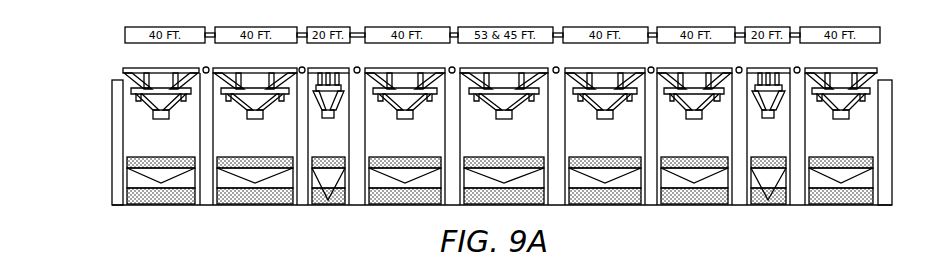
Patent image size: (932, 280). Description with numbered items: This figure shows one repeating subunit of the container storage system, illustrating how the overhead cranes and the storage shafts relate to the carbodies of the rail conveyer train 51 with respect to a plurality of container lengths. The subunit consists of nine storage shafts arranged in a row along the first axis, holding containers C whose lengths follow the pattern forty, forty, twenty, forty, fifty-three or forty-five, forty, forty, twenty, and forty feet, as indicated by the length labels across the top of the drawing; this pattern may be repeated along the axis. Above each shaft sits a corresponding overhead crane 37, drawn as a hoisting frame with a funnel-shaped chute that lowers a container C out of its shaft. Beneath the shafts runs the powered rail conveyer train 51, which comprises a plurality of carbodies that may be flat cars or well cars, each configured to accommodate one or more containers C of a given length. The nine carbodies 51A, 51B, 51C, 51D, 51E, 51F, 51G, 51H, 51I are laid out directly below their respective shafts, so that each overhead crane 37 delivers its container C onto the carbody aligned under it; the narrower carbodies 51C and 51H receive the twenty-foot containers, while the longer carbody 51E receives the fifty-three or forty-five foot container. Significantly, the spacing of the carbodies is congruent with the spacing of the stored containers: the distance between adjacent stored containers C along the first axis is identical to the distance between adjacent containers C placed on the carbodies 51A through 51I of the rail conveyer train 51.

The overhead crane 37 is at (256, 66).
The rail conveyer train 51 is at (108, 191).
The carbody 51A is at (161, 171).
The carbody 51B is at (255, 171).
The carbody 51C is at (328, 171).
The carbody 51D is at (405, 171).
The carbody 51E is at (504, 171).
The carbody 51F is at (605, 171).
The carbody 51G is at (694, 171).
The carbody 51H is at (768, 171).
The carbody 51I is at (841, 171).